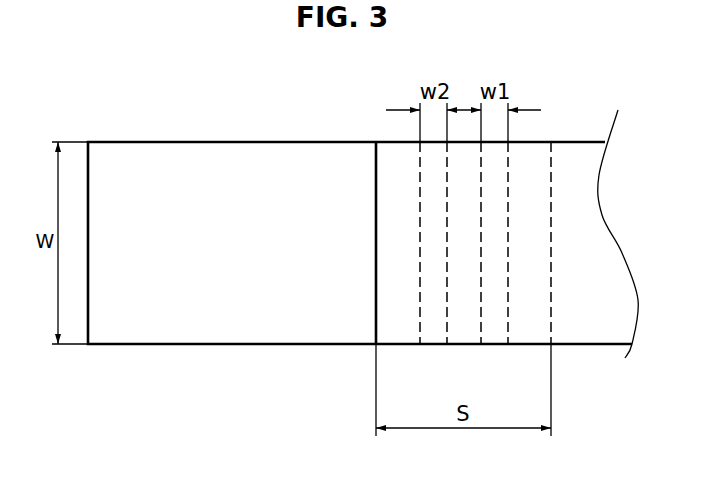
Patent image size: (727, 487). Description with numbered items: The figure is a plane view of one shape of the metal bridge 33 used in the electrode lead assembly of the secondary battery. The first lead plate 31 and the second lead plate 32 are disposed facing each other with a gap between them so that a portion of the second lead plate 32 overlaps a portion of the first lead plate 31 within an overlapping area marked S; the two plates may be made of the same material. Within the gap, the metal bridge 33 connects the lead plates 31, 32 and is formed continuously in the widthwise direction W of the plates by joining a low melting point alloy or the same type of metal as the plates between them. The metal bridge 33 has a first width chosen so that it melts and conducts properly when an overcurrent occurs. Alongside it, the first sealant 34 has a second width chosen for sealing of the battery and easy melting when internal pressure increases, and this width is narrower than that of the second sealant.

The first lead plate 31 is at (582, 142).
The second lead plate 32 is at (134, 142).
The metal bridge 33 is at (493, 332).
The first sealant 34 is at (432, 332).